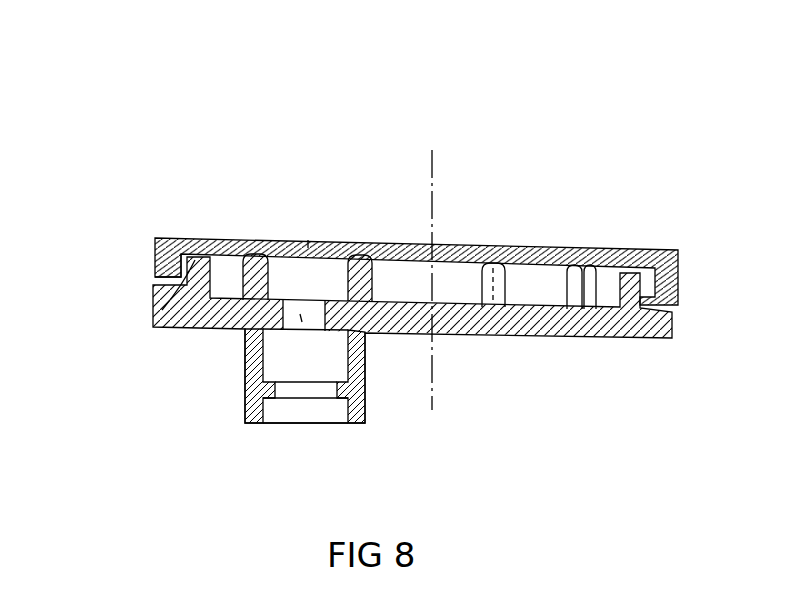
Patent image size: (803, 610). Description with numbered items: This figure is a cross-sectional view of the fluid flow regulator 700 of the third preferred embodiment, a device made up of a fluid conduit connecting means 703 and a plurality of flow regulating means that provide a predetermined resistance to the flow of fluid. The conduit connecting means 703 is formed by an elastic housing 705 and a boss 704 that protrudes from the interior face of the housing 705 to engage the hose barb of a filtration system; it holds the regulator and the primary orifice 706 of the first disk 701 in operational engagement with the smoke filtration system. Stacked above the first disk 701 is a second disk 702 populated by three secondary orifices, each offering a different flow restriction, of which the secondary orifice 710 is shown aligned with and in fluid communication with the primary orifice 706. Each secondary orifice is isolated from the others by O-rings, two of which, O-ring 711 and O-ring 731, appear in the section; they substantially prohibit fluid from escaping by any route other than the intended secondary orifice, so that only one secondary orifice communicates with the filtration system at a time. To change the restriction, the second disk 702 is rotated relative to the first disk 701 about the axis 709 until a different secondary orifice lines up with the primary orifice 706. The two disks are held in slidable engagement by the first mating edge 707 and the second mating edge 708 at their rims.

The fluid flow regulator 700 is at (687, 118).
The first disk 701 is at (530, 337).
The second disk 702 is at (558, 246).
The fluid conduit connecting means 703 is at (235, 368).
The boss 704 is at (290, 398).
The elastic housing 705 is at (360, 368).
The primary orifice 706 is at (248, 330).
The first mating edge 707 is at (153, 303).
The second mating edge 708 is at (155, 240).
The axis 709 is at (435, 178).
The secondary orifice 710 is at (305, 243).
The O-ring 711 is at (250, 253).
The O-ring 731 is at (493, 262).